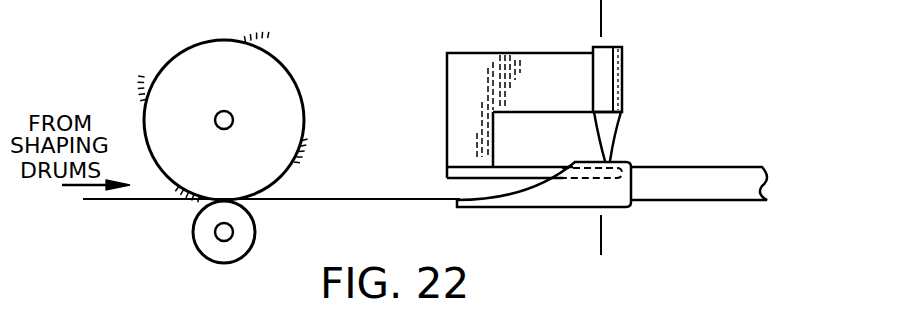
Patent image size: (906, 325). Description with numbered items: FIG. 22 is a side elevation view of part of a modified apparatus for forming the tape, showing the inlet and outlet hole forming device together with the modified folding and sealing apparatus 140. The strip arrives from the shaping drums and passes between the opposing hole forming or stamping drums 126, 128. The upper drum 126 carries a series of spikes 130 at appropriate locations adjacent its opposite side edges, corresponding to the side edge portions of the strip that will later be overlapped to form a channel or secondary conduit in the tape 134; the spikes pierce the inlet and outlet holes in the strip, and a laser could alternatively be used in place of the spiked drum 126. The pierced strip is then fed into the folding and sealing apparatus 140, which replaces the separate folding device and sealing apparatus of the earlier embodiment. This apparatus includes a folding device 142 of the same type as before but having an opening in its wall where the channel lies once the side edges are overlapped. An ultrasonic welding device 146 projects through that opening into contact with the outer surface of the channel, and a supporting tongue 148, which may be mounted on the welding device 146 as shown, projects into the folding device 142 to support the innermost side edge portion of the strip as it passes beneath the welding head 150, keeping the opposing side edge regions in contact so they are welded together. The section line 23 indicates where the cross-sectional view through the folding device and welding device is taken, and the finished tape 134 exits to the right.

The section line 23- 23 is at (590, 13).
The hole forming drum 126 is at (291, 113).
The opposing hole forming drum 128 is at (199, 236).
The spikes 130 is at (252, 42).
The tape 134 is at (735, 175).
The folding and sealing apparatus 140 is at (438, 152).
The folding device 142 is at (612, 202).
The ultrasonic welding device 146 is at (610, 80).
The supporting tongue 148 is at (550, 170).
The welding head 150 is at (613, 152).